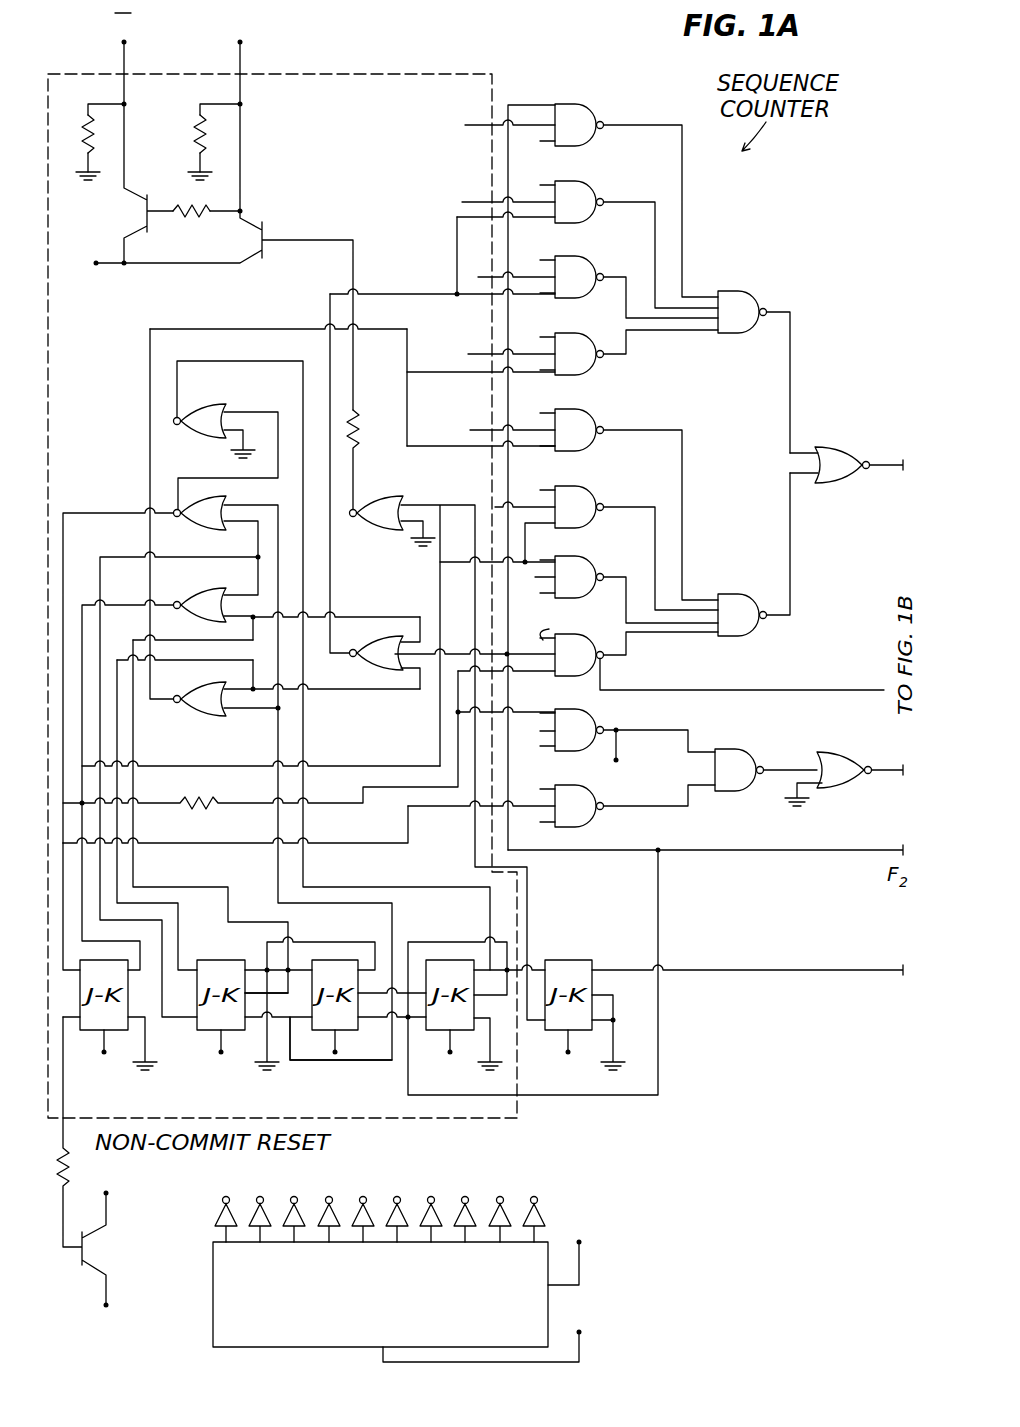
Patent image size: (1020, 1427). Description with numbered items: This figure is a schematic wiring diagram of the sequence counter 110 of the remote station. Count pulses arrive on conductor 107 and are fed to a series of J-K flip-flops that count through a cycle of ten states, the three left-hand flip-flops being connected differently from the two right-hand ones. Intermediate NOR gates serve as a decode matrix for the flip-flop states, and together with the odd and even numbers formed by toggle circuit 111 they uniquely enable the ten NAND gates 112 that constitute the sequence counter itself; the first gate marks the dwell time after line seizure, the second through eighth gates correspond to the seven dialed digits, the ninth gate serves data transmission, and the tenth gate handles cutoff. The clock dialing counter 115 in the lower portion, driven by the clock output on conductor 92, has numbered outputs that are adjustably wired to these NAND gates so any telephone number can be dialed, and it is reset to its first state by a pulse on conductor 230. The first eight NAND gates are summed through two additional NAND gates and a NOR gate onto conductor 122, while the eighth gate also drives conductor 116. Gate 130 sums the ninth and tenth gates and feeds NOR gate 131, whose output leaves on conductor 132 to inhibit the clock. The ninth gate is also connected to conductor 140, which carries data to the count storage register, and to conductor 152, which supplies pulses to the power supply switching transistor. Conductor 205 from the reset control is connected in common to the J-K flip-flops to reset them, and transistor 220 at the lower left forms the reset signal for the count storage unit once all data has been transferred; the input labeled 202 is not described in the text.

The conductor 107 is at (846, 975).
The sequence counter 110 is at (824, 199).
The toggle circuit 111 is at (279, 139).
The NAND gates 112 is at (585, 56).
The clock dialing counter 115 is at (347, 1263).
The conductor 116 is at (683, 692).
The conductor 122 is at (866, 460).
The gate 130 is at (740, 793).
The NOR gate 131 is at (836, 754).
The conductor 132 is at (888, 789).
The conductor 140 is at (615, 768).
The conductor 152 is at (619, 748).
The gate input 202 is at (563, 627).
The conductor 205 is at (104, 1045).
The transistor 220 is at (92, 1240).
The conductor 230 is at (580, 1272).
The conductor 92 is at (579, 1352).